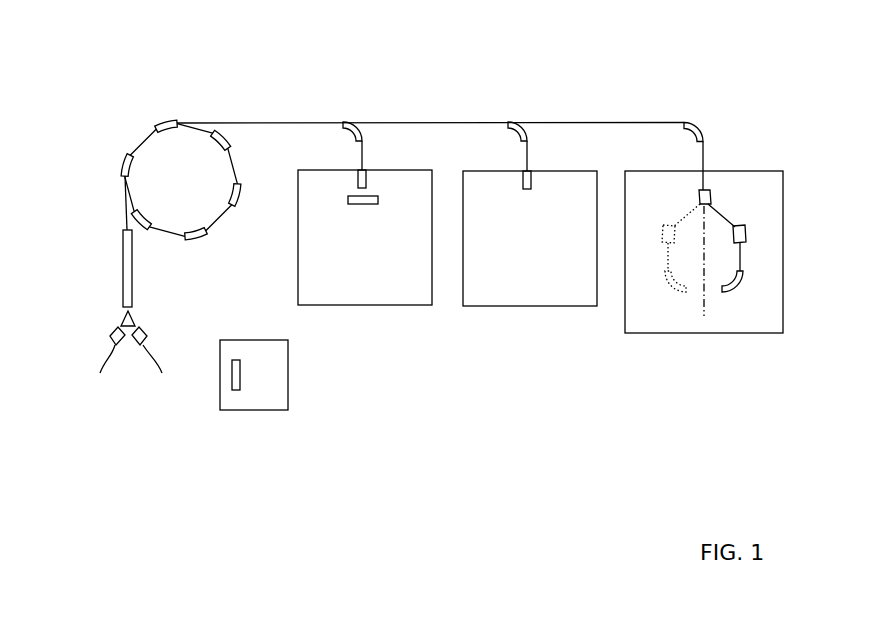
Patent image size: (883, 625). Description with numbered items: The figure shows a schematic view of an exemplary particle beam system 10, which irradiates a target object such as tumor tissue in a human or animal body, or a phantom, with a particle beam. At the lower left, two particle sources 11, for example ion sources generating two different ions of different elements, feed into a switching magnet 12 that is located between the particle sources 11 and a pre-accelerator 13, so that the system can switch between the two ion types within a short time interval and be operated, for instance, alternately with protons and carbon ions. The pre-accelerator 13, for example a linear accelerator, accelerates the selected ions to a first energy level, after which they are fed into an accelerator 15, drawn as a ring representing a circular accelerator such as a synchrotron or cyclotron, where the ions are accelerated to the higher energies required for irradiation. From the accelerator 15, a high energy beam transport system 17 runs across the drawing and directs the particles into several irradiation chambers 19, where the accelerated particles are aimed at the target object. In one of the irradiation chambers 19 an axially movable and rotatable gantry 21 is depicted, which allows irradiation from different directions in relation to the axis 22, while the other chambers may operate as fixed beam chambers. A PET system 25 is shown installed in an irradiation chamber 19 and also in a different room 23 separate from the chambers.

The particle beam system 10 is at (568, 462).
The particle source 11 is at (131, 374).
The switching magnet 12 is at (127, 318).
The pre-accelerator 13 is at (133, 278).
The accelerator 15 is at (172, 118).
The high energy beam transport system 17 is at (426, 120).
The irradiation chamber 19 is at (397, 305).
The gantry 21 is at (728, 220).
The axis 22 is at (703, 310).
The different room 23 is at (290, 368).
The PET system 25 is at (378, 204).